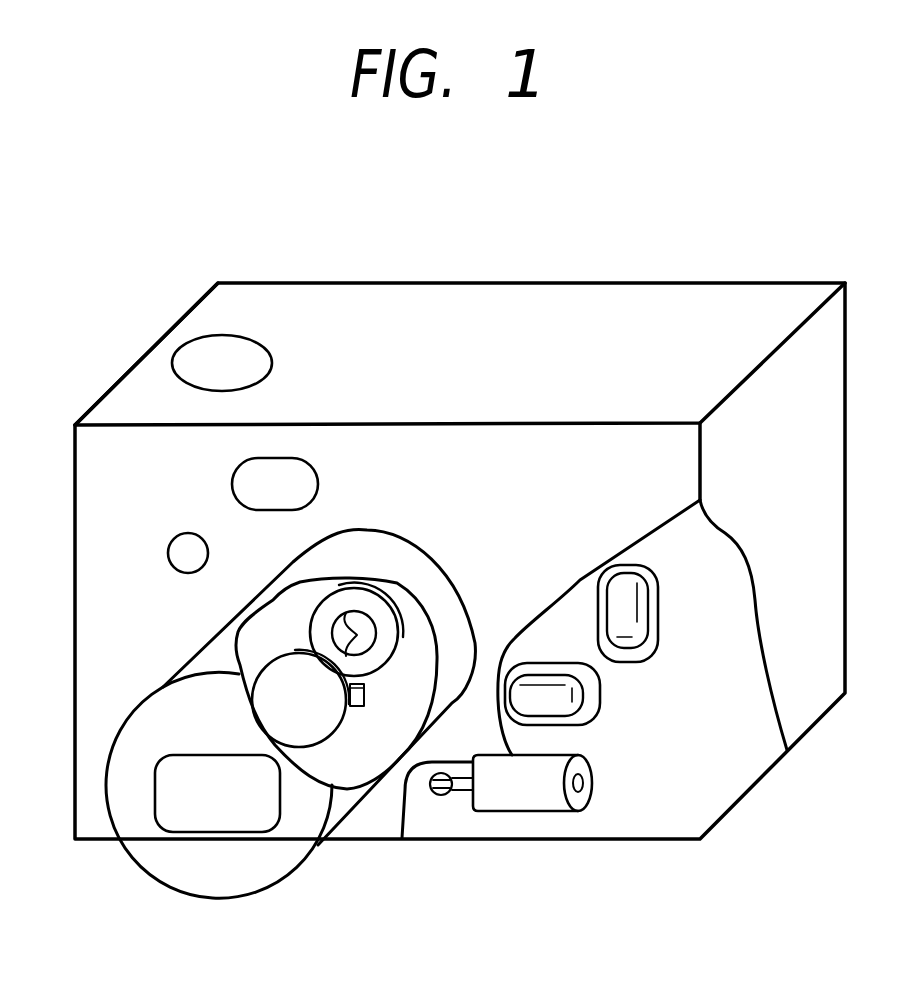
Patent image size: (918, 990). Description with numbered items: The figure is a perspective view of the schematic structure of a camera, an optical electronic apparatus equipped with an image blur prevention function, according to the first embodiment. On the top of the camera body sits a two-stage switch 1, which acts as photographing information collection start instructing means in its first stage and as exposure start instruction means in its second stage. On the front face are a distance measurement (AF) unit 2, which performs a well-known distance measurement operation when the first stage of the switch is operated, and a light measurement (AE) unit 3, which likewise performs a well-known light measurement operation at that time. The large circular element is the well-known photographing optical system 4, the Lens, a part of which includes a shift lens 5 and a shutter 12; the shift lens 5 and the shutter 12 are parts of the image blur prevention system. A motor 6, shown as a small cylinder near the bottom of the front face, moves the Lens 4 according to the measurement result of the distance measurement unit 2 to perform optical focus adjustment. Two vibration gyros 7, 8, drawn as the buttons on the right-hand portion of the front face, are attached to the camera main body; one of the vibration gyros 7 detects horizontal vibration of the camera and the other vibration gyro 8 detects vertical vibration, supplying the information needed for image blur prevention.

The two-stage switch 1 is at (202, 363).
The distance measurement (AF) unit 2 is at (248, 483).
The light measurement (AE) unit 3 is at (178, 550).
The photographing optical system 4 is at (163, 863).
The shift lens 5 is at (327, 717).
The motor 6 is at (510, 802).
The vibration gyro (Gyro-Y) 7 is at (633, 567).
The vibration gyro (Gyro-P) 8 is at (572, 662).
The shutter 12 is at (383, 590).